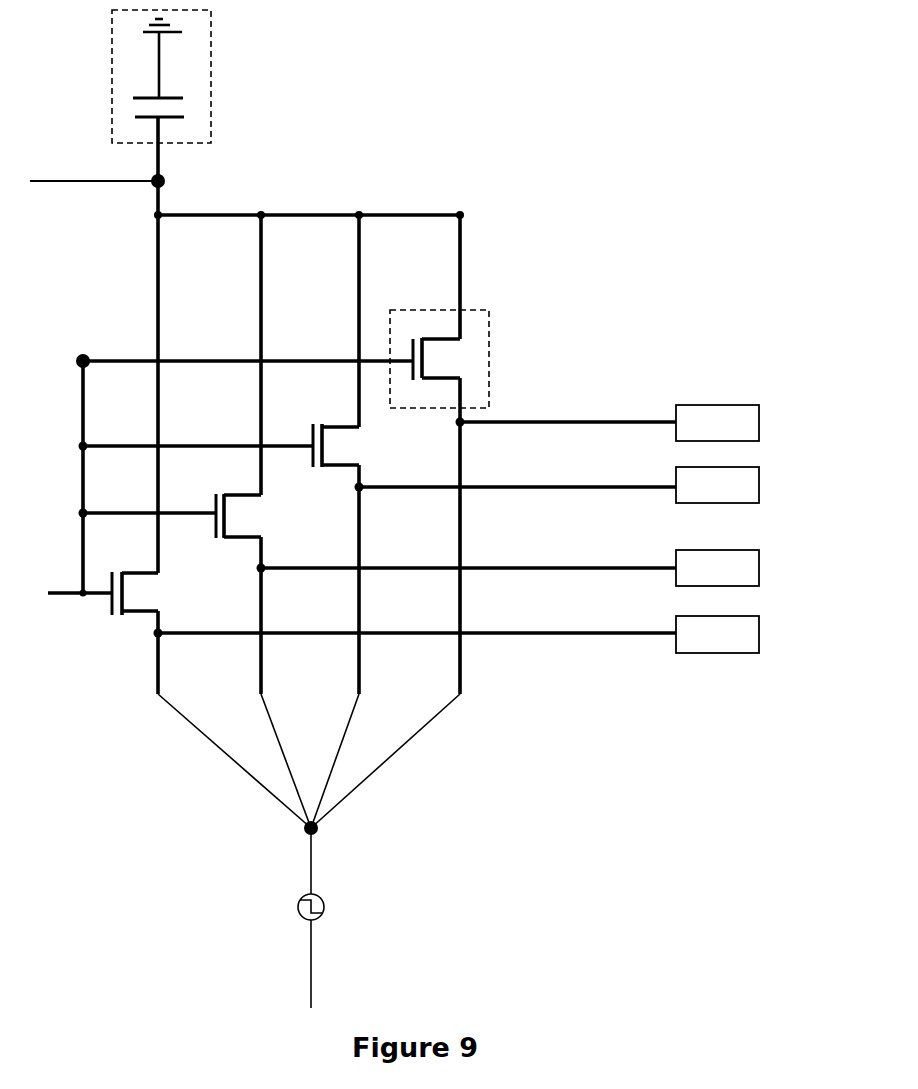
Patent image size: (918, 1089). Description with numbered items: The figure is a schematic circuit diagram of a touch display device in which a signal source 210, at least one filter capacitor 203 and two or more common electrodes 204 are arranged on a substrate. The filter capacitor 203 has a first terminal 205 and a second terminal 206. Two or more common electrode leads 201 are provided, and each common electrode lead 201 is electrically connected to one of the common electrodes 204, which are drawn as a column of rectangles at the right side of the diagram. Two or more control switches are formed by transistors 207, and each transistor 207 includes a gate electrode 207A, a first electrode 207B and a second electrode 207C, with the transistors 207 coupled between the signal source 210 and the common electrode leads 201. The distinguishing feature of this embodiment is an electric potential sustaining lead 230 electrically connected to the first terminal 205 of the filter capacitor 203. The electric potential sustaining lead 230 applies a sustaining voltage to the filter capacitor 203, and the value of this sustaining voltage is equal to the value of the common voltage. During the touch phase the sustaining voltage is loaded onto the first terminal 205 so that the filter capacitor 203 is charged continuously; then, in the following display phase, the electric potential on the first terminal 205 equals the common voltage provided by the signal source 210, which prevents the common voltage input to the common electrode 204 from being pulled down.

The common electrode lead 201 is at (594, 420).
The filter capacitor 203 is at (188, 81).
The common electrode 204 is at (759, 571).
The first terminal 205 is at (147, 121).
The second terminal 206 is at (149, 98).
The transistor 207 is at (488, 372).
The gate electrode 207A is at (413, 362).
The first electrode 207B is at (462, 378).
The second electrode 207C is at (462, 339).
The signal source 210 is at (305, 922).
The electric potential sustaining lead 230 is at (120, 183).